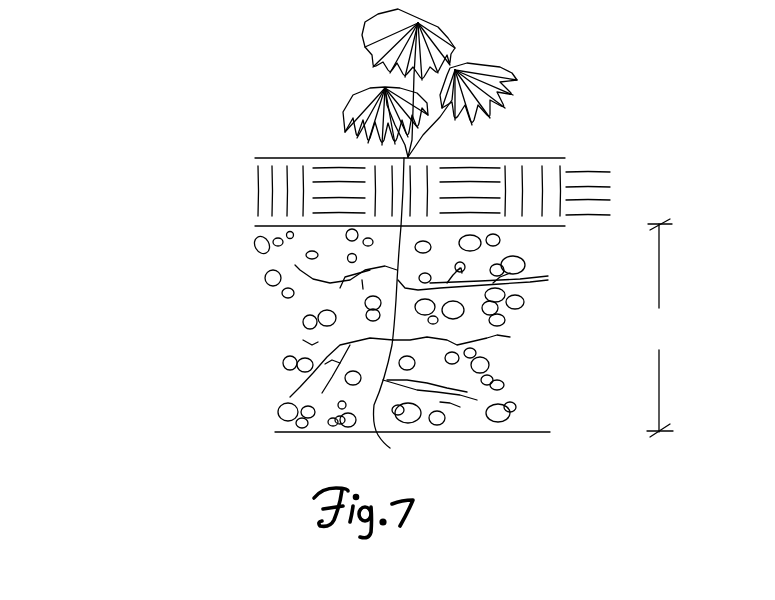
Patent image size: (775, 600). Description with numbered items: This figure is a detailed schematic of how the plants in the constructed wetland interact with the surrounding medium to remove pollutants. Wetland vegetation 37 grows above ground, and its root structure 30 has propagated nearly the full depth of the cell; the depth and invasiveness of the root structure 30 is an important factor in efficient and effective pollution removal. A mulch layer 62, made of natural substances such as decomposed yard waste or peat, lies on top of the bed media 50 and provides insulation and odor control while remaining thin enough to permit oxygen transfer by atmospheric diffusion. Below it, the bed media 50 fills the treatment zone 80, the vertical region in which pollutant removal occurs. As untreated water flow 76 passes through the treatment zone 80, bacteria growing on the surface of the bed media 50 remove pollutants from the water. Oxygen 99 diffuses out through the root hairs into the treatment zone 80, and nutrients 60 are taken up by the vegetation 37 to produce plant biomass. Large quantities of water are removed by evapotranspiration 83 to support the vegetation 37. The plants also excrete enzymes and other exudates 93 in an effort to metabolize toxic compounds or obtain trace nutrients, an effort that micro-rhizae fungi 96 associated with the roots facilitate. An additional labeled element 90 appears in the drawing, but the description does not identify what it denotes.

The root structure 30 is at (400, 311).
The wetland vegetation 37 is at (440, 43).
The bed media 50 is at (255, 258).
The nutrients 60 is at (575, 372).
The mulch layer 62 is at (242, 209).
The untreated water flow 76 is at (282, 317).
The treatment zone 80 is at (660, 328).
The evapotranspiration 83 is at (540, 345).
The upper soil zone 90 is at (545, 262).
The exudates 93 is at (533, 277).
The micro-rhizae fungi 96 is at (578, 300).
The oxygen 99 is at (537, 410).